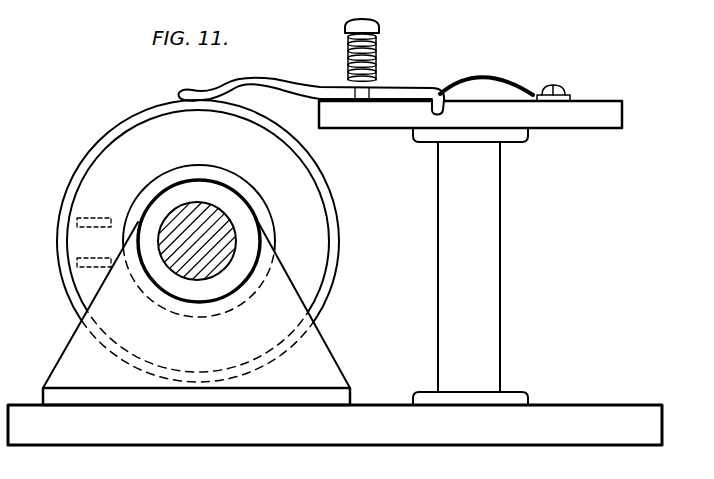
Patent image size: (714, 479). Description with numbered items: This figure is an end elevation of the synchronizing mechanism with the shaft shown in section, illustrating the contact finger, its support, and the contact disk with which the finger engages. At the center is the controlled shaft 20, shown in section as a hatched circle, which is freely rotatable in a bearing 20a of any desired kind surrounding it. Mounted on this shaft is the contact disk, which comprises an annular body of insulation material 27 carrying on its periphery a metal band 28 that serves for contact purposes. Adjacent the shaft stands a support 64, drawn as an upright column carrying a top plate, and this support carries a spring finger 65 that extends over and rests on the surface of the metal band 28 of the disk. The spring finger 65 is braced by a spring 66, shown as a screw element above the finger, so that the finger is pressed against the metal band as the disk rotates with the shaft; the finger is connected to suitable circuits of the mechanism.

The controlled shaft 20 is at (213, 217).
The bearing 20a is at (245, 227).
The annular body of insulation material 27 is at (108, 165).
The metal band 28 is at (117, 127).
The support 64 is at (493, 213).
The spring finger 65 is at (295, 87).
The spring 66 is at (373, 43).